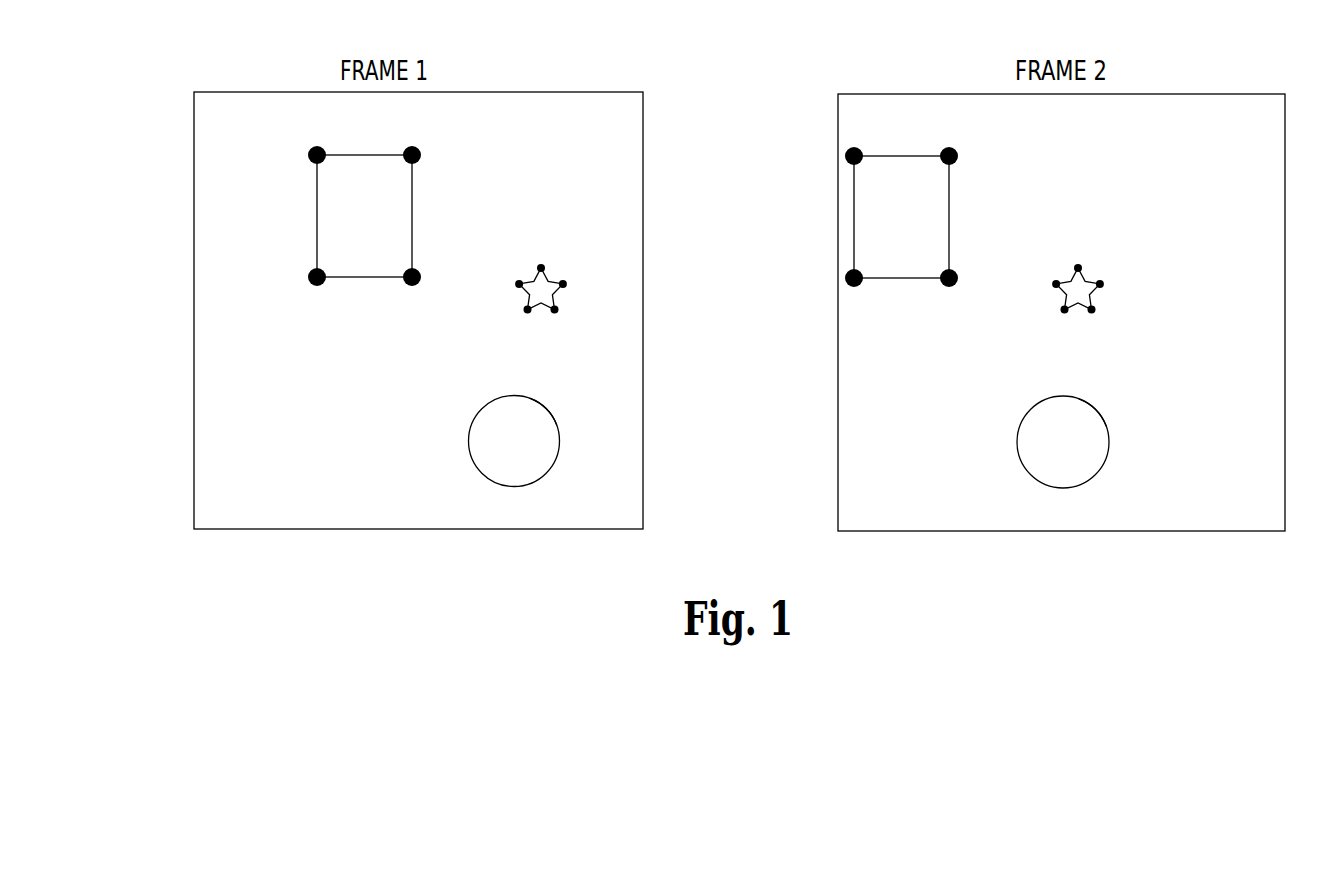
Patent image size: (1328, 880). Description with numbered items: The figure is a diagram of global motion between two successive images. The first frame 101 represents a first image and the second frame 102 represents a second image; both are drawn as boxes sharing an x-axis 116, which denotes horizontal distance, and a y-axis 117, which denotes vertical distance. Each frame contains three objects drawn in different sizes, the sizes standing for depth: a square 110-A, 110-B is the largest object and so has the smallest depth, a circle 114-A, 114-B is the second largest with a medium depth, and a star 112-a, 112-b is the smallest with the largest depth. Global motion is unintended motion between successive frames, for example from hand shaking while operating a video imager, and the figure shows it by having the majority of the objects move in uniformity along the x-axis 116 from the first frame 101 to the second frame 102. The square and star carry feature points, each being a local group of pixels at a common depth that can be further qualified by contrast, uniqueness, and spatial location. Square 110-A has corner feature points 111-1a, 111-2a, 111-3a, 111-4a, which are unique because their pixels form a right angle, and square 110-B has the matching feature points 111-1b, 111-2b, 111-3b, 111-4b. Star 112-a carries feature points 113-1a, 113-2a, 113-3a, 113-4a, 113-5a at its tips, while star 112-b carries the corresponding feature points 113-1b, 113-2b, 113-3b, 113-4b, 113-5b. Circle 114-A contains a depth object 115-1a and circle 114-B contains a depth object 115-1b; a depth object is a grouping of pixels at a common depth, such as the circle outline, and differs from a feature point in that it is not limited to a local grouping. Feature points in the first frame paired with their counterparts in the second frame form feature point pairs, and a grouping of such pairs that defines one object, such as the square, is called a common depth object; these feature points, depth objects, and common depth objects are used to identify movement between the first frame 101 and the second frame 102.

The frame 1 101 is at (532, 50).
The frame 2 102 is at (1172, 49).
The square 110-A is at (393, 229).
The square 110-B is at (930, 231).
The feature point 111-1a is at (416, 137).
The feature point 111-2a is at (413, 286).
The feature point 111-3a is at (318, 286).
The feature point 111-4a is at (322, 137).
The feature point 111-1b is at (951, 147).
The feature point 111-2b is at (950, 287).
The feature point 111-3b is at (855, 287).
The feature point 111-4b is at (856, 147).
The star 112-a is at (584, 228).
The star 112-b is at (1120, 228).
The feature point 113-1a is at (537, 267).
The feature point 113-2a is at (592, 282).
The feature point 113-3a is at (559, 311).
The feature point 113-4a is at (524, 313).
The feature point 113-5a is at (515, 284).
The feature point 113-1b is at (1074, 267).
The feature point 113-2b is at (1104, 285).
The feature point 113-3b is at (1096, 311).
The feature point 113-4b is at (1061, 313).
The feature point 113-5b is at (1052, 286).
The circle 114-A is at (546, 457).
The circle 114-B is at (1094, 458).
The depth object 115-1a is at (553, 410).
The depth object 115-1b is at (1102, 410).
The x-axis 116 is at (416, 574).
The y-axis 117 is at (146, 318).